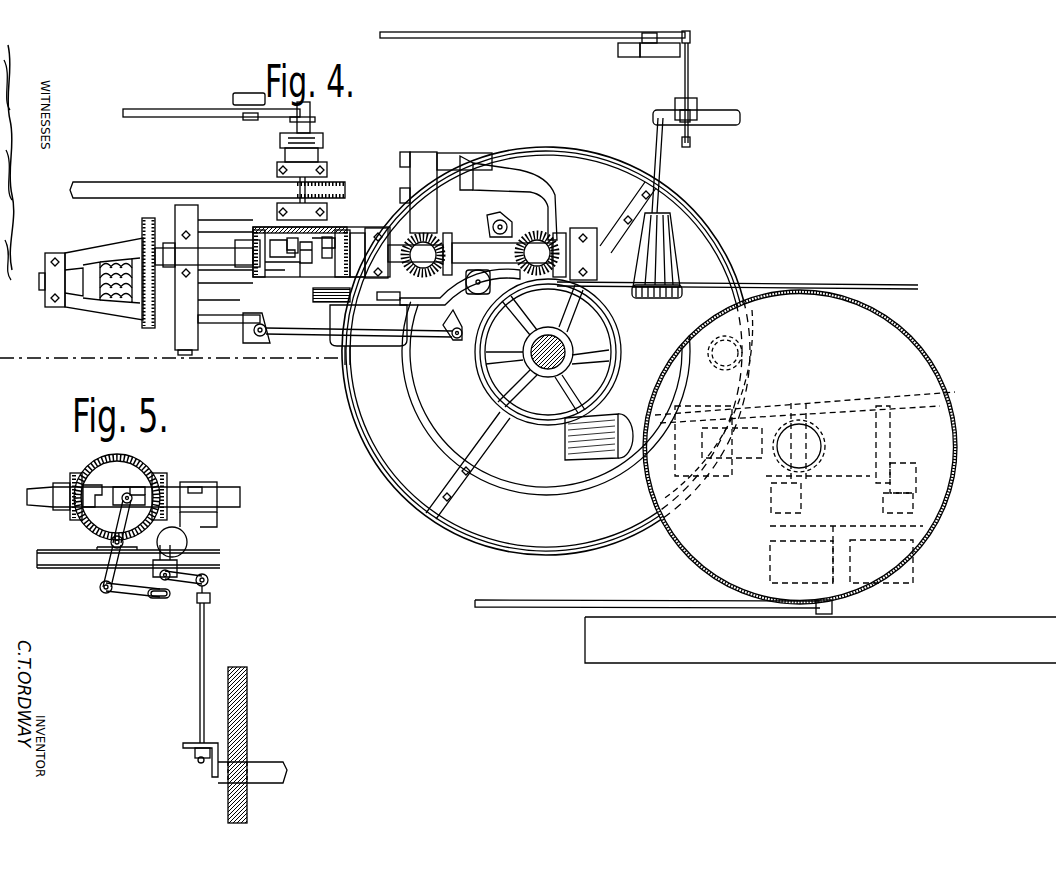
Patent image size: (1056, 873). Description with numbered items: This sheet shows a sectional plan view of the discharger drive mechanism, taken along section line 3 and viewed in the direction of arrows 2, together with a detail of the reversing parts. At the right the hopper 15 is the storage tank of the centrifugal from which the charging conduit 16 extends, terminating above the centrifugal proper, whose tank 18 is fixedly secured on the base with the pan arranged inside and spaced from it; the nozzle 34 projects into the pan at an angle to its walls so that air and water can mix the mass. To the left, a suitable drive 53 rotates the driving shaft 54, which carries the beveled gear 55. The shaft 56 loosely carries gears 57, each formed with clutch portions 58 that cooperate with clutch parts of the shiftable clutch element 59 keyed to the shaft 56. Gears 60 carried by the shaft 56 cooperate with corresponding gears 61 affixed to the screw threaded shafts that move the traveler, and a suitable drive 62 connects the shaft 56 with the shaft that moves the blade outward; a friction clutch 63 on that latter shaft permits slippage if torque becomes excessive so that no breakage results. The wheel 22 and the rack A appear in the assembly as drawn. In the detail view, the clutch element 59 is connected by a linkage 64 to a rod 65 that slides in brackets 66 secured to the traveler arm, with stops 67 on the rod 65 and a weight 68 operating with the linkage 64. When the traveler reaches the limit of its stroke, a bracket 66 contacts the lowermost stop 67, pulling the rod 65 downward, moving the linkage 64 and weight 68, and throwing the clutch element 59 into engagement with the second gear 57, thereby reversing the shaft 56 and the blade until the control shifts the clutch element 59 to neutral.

In FIG. 4, the section line 2 is at (922, 290).
In FIG. 4, the section line 3 / hand lever 3 is at (702, 300).
In FIG. 4, the hopper 15 is at (930, 350).
In FIG. 4, the charging conduit 16 is at (816, 445).
In FIG. 4, the tank 18 is at (488, 538).
In FIG. 4, the pulley wheel 22 is at (527, 360).
In FIG. 4, the nozzle 34 is at (660, 257).
In FIG. 4, the drive 53 is at (242, 190).
In FIG. 4, the driving shaft 54 is at (296, 125).
In FIG. 4, the beveled gear 55 is at (256, 228).
In FIG. 5, the beveled gear 55 is at (137, 465).
In FIG. 4, the shaft 56 is at (226, 255).
In FIG. 5, the shaft 56 is at (228, 498).
In FIG. 4, the gears 57 is at (262, 282).
In FIG. 5, the gears 57 is at (78, 477).
In FIG. 4, the clutch portions 58 is at (340, 227).
In FIG. 4, the clutch element 59 is at (305, 257).
In FIG. 5, the clutch element 59 is at (117, 487).
In FIG. 4, the gears 60 is at (446, 234).
In FIG. 4, the gears 61 is at (427, 277).
In FIG. 4, the drive 62 is at (149, 220).
In FIG. 4, the friction clutch 63 is at (127, 293).
In FIG. 5, the linkage 64 is at (135, 592).
In FIG. 5, the rod 65 is at (203, 632).
In FIG. 5, the brackets 66 is at (218, 753).
In FIG. 5, the stops 67 is at (210, 594).
In FIG. 4, the weight 68 is at (335, 283).
In FIG. 5, the weight 68 is at (177, 537).
In FIG. 5, the rack bar A is at (247, 680).